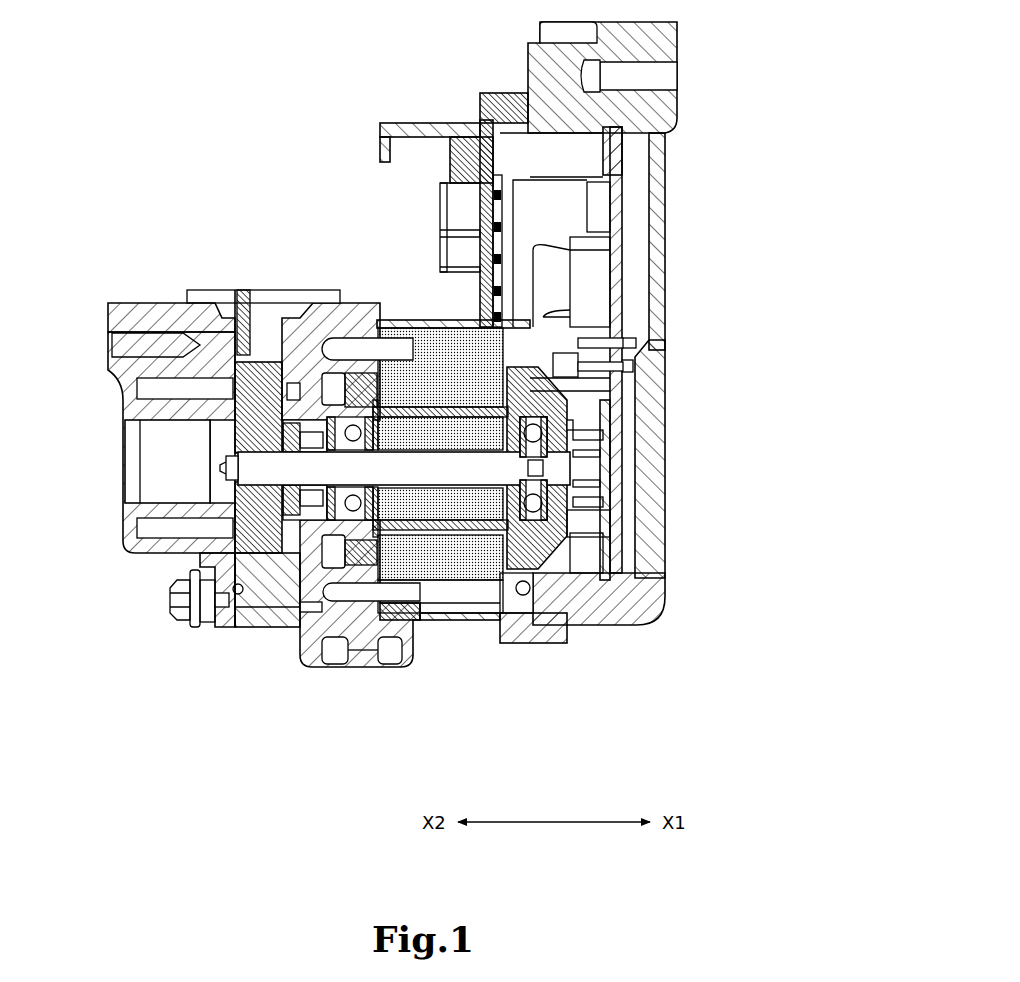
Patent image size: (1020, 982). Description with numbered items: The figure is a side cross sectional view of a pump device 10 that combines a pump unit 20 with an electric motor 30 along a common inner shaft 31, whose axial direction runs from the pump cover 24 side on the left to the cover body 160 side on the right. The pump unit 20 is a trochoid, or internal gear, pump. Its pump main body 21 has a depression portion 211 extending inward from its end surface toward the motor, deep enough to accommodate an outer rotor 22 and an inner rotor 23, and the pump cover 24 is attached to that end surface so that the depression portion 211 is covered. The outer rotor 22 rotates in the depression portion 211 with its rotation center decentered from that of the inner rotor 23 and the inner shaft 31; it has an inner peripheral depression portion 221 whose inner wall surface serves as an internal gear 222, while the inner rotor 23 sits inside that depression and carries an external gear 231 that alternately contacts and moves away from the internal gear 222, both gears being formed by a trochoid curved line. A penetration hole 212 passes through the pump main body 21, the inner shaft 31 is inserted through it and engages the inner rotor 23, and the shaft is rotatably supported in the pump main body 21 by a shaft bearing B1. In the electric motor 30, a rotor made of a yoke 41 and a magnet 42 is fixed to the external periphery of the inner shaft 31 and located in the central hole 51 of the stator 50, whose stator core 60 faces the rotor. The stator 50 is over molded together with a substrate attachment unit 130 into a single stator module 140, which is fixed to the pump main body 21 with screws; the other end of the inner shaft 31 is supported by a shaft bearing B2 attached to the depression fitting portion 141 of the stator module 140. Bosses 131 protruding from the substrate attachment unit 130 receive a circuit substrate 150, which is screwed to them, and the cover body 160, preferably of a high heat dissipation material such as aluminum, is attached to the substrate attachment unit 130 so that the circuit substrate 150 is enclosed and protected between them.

The pump device 10 is at (320, 183).
The pump unit 20 is at (251, 640).
The pump main body 21 is at (257, 597).
The outer rotor 22 is at (264, 360).
The inner rotor 23 is at (200, 432).
The pump cover 24 is at (122, 533).
The electric motor 30 is at (470, 633).
The inner shaft 31 is at (433, 470).
The yoke 41 is at (396, 398).
The magnet 42 is at (405, 555).
The stator 50 is at (436, 623).
The central hole 51 is at (375, 630).
The stator core 60 is at (449, 320).
The substrate attachment unit 130 is at (530, 228).
The boss 131 is at (543, 143).
The stator module 140 is at (512, 653).
The depression fitting portion 141 is at (623, 446).
The circuit substrate 150 is at (632, 290).
The cover body 160 is at (678, 326).
The depression portion 211 is at (240, 418).
The penetration hole 212 is at (290, 458).
The inner peripheral depression portion 221 is at (180, 337).
The internal gear 222 is at (238, 352).
The external gear 231 is at (200, 553).
The shaft bearing B1 is at (350, 518).
The shaft bearing B2 is at (604, 488).